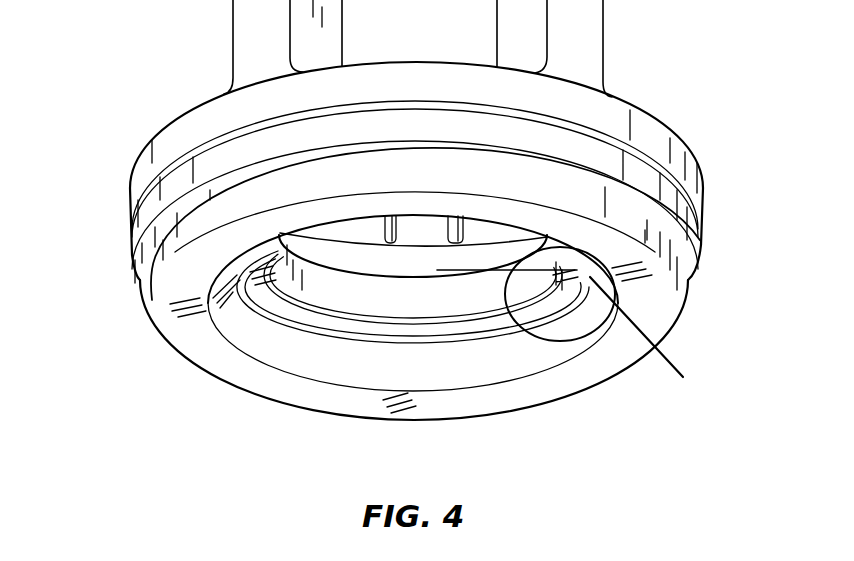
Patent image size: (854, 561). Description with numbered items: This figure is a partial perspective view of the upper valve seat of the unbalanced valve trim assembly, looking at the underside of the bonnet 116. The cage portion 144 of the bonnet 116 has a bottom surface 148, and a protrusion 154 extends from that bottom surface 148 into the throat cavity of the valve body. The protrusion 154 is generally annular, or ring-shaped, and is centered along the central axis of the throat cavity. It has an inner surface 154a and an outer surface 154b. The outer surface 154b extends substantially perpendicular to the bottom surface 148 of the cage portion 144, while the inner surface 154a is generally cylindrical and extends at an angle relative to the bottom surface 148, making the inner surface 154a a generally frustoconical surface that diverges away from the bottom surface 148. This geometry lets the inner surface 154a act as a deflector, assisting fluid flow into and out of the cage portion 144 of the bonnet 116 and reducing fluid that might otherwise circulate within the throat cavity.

The bonnet 116 is at (129, 210).
The cage portion 144 is at (250, 29).
The bottom surface 148 is at (145, 263).
The protrusion 154 is at (543, 393).
The inner surface 154a is at (265, 347).
The outer surface 154b is at (553, 185).